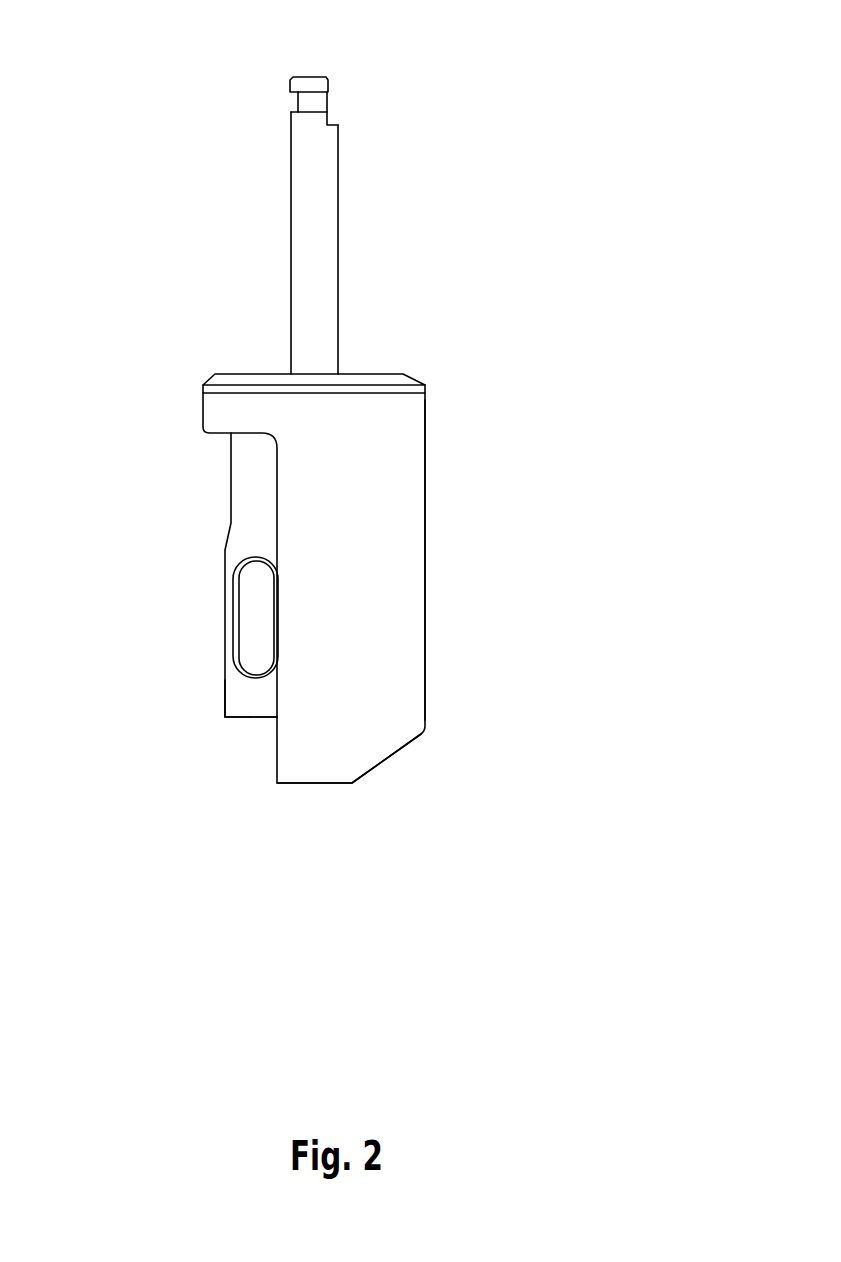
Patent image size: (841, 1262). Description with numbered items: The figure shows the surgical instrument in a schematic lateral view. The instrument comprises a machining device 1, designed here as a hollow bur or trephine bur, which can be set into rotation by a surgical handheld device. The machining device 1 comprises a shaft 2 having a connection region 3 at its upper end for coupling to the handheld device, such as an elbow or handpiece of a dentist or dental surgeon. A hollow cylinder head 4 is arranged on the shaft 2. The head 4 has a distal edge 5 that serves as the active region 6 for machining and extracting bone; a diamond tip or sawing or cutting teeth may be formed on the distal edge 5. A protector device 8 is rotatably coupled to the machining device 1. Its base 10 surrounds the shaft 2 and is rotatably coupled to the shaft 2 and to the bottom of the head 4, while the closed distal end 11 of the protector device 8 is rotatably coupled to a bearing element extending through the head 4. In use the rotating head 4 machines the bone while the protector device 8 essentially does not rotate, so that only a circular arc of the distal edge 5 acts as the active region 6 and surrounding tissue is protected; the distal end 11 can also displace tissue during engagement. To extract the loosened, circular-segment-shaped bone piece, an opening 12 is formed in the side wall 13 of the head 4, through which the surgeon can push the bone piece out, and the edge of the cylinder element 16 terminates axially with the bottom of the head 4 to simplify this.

The machining device 1 is at (323, 259).
The shaft 2 is at (323, 202).
The connection region 3 is at (315, 98).
The head 4 is at (237, 697).
The distal edge 5 is at (233, 718).
The active region 6 is at (265, 718).
The protector device 8 is at (405, 372).
The base 10 is at (374, 370).
The distal end 11 is at (342, 760).
The opening 12 is at (257, 635).
The side wall 13 is at (250, 506).
The cylinder element 16 is at (413, 545).